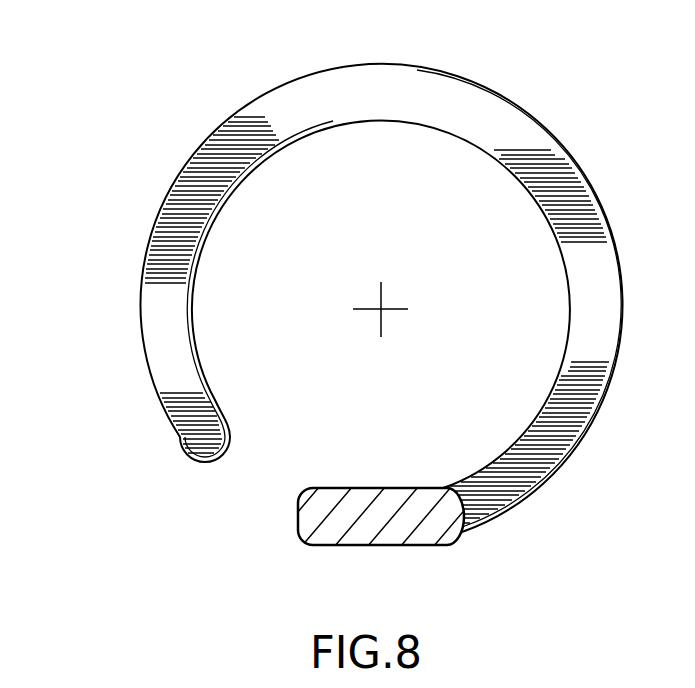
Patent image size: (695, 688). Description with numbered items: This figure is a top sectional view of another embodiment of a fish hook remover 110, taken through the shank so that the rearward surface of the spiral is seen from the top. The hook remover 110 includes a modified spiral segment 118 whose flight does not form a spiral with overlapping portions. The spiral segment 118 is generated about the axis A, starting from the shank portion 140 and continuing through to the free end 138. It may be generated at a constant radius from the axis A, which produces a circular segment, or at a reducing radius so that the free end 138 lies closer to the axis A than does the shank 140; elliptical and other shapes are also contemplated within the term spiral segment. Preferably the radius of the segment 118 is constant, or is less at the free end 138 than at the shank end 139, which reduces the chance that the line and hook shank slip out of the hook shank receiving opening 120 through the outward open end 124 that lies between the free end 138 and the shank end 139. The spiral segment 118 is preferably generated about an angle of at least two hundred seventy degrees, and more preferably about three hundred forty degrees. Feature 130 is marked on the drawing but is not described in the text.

The fish hook remover 110 is at (150, 124).
The spiral segment 118 is at (530, 103).
The hook shank receiving opening 120 is at (321, 243).
The outward open end 124 is at (255, 490).
The ring body 130 is at (320, 103).
The free end 138 is at (228, 462).
The shank end 139 is at (298, 509).
The shank portion 140 is at (388, 547).
The axis A is at (382, 311).